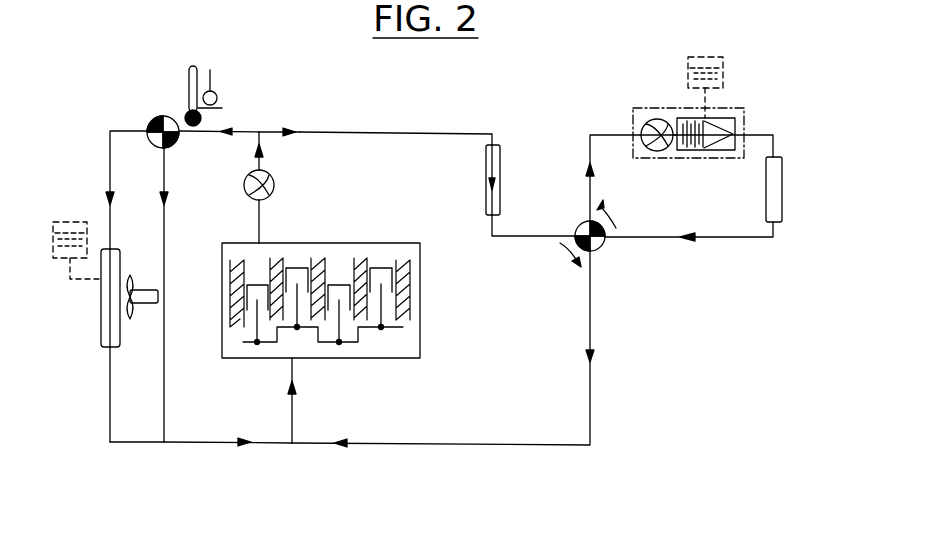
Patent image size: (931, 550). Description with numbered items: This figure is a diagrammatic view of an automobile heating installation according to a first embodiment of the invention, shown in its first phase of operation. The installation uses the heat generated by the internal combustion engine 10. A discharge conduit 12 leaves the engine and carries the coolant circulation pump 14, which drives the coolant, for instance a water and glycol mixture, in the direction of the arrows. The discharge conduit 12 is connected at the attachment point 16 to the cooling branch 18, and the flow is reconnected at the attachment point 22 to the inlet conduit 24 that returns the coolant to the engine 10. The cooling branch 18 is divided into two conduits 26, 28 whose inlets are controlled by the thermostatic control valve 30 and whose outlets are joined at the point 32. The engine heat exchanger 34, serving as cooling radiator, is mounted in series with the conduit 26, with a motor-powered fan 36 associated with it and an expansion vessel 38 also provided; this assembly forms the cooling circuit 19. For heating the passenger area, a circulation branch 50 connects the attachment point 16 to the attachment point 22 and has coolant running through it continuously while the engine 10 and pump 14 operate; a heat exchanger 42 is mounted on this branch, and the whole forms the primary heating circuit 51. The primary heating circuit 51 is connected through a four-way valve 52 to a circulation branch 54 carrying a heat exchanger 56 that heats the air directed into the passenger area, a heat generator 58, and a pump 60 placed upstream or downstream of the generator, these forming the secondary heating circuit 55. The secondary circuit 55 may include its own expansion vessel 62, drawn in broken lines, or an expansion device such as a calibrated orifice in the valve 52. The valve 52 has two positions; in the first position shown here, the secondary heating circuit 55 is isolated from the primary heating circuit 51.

The internal combustion engine 10 is at (400, 358).
The discharge conduit 12 is at (261, 216).
The coolant circulation pump 14 is at (274, 183).
The attachment point 16 is at (262, 130).
The cooling branch 18 is at (242, 131).
The cooling circuit 19 is at (199, 225).
The attachment point 22 is at (291, 446).
The inlet conduit 24 is at (292, 418).
The conduit 26 is at (108, 169).
The conduit 28 is at (166, 176).
The thermostatic control valve 30 is at (153, 122).
The connection point 32 is at (163, 446).
The engine heat exchanger 34 is at (108, 317).
The motor-powered fan 36 is at (147, 305).
The expansion vessel 38 is at (48, 257).
The heat exchanger 42 is at (496, 156).
The circulation branch 50 is at (381, 132).
The primary heating circuit 51 is at (489, 309).
The four-way valve 52 is at (574, 235).
The circulation branch 54 is at (588, 154).
The secondary heating circuit 55 is at (677, 209).
The heat exchanger 56 is at (776, 185).
The heat generator 58 is at (725, 118).
The pump 60 is at (656, 118).
The expansion vessel 62 is at (733, 62).